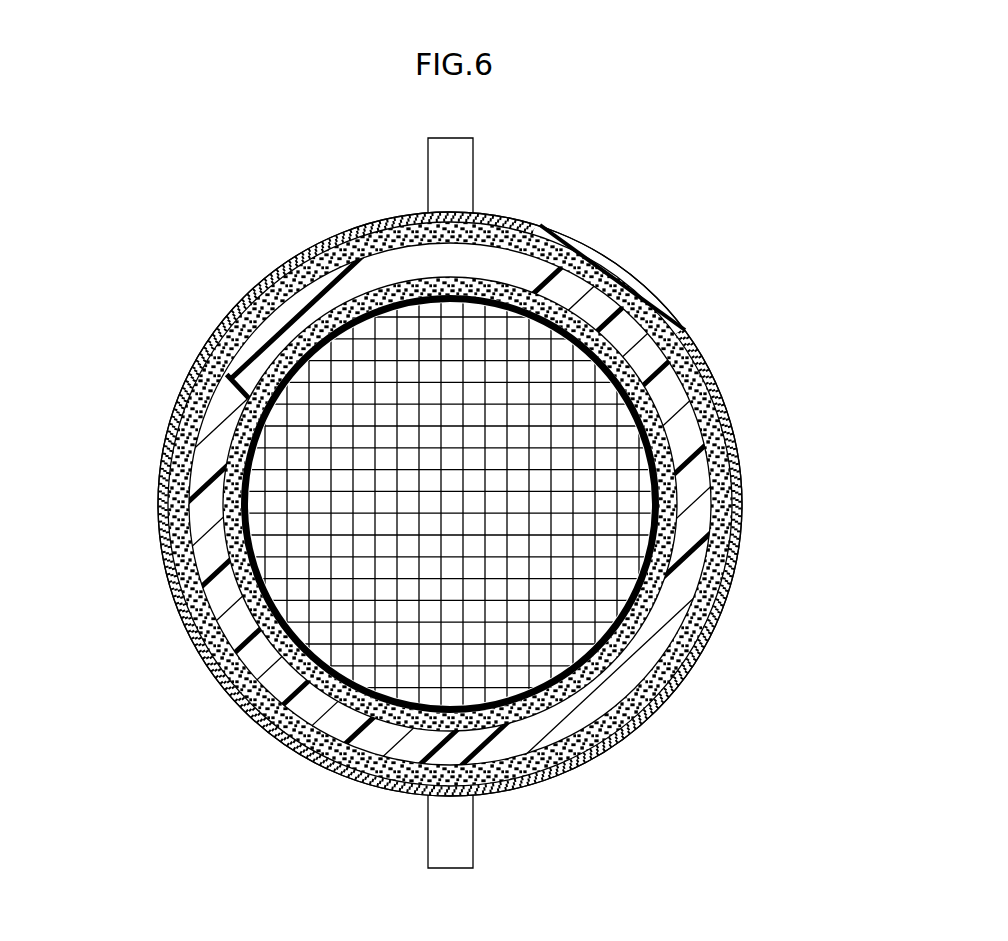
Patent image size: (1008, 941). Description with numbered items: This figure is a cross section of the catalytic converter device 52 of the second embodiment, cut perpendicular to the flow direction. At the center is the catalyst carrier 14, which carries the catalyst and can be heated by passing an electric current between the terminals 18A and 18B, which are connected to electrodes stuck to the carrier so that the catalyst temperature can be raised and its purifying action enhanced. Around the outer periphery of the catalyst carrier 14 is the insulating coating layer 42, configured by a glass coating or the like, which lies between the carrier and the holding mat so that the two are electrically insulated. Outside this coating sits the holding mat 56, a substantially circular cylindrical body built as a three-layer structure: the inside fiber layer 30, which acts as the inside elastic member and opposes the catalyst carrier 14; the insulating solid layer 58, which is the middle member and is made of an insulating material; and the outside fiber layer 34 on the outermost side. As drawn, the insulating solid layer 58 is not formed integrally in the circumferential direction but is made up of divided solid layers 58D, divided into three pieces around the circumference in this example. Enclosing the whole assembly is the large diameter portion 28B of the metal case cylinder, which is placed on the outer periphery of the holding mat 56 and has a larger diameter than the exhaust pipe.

The catalyst carrier 14 is at (643, 483).
The terminal 18A is at (476, 172).
The terminal 18B is at (476, 838).
The large diameter portion 28B is at (250, 717).
The inside fiber layer 30 is at (700, 347).
The outside fiber layer 34 is at (637, 278).
The insulating coating layer 42 is at (683, 550).
The catalytic converter device 52 is at (475, 492).
The holding mat 56 is at (474, 511).
The insulating solid layer 58 is at (663, 303).
The divided solid layer 58D is at (593, 252).